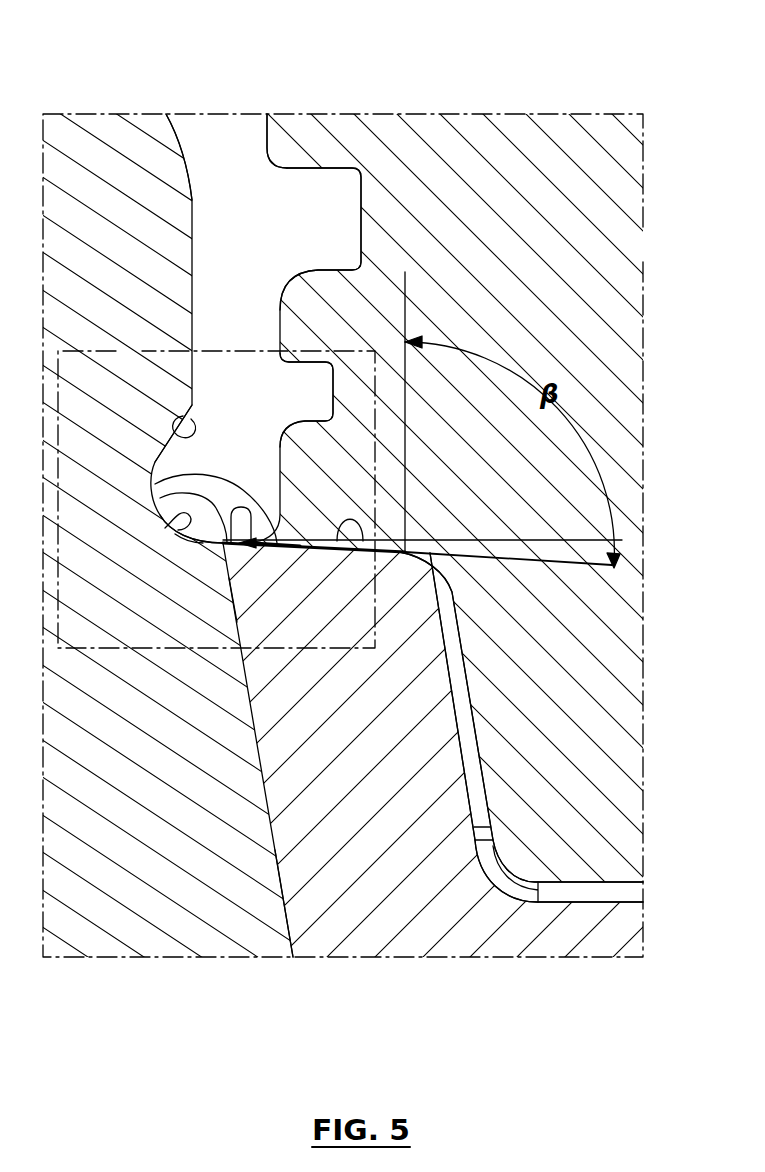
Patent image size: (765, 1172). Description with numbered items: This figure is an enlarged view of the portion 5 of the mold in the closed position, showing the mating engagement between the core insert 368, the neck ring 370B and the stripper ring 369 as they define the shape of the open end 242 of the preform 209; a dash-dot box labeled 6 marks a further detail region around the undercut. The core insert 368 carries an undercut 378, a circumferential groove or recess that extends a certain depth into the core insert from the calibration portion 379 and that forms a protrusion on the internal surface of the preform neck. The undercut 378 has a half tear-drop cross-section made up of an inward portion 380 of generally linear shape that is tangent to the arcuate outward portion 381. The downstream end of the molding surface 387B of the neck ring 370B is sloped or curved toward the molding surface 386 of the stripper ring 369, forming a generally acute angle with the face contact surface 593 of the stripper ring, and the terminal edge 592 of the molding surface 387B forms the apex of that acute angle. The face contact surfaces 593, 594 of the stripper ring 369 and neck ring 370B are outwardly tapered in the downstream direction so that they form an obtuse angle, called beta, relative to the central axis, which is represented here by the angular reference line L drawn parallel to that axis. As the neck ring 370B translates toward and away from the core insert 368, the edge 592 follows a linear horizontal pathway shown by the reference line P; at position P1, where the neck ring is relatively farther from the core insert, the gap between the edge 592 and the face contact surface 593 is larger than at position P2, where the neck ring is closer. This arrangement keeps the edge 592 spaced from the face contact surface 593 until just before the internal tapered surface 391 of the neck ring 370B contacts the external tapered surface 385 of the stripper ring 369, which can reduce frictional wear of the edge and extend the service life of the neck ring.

The preform 209 is at (228, 152).
The neck ring 370B is at (497, 152).
The calibration portion 379 is at (220, 293).
The undercut 378 is at (183, 459).
The inward portion 380 is at (191, 419).
The molding surface 387B is at (155, 484).
The molding surface 386 is at (160, 498).
The outward portion 381 is at (165, 528).
The open end 242 is at (182, 550).
The face contact surface 593 is at (337, 541).
The terminal edge 592 is at (240, 596).
The face contact surface 594 is at (403, 553).
The external tapered surface 385 is at (270, 797).
The core insert 368 is at (118, 928).
The internal tapered surface 391 is at (272, 883).
The stripper ring 369 is at (475, 928).
The portion 5 is at (347, 535).
The detail box 6 is at (216, 493).
The reference line P is at (530, 533).
The position P1 is at (443, 544).
The position P2 is at (285, 542).
The angular reference line L is at (405, 312).